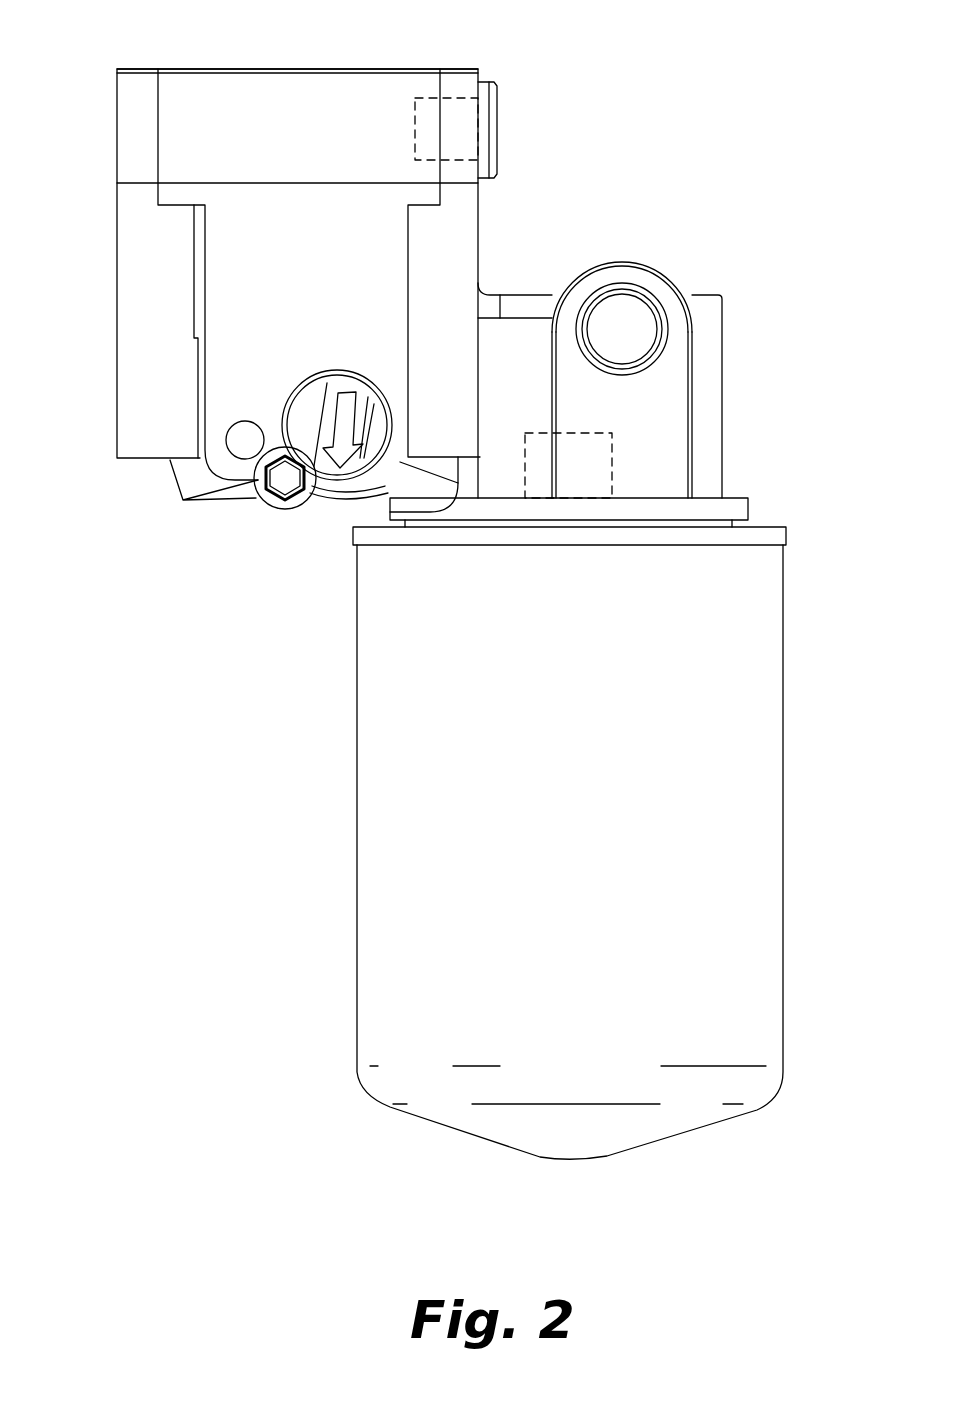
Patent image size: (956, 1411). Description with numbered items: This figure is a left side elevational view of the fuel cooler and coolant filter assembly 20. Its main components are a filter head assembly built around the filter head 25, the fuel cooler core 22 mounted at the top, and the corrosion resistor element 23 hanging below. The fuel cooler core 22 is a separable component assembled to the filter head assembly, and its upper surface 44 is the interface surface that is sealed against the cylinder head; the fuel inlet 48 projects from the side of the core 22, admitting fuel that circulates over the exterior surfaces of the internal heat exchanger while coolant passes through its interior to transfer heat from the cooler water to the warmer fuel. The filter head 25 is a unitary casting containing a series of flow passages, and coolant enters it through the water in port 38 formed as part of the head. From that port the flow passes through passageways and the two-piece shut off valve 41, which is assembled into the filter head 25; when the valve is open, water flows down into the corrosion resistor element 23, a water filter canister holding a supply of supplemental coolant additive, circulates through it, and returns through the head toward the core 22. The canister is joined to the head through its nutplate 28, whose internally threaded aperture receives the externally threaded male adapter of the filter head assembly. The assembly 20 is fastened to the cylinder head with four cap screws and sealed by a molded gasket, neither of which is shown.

The fuel cooler and coolant filter assembly 20 is at (756, 232).
The fuel cooler core 22 is at (140, 140).
The corrosion resistor element 23 is at (713, 811).
The filter head 25 is at (708, 390).
The nutplate 28 is at (774, 527).
The water in port 38 is at (616, 326).
The shut off valve 41 is at (346, 483).
The interface surface 44 is at (328, 69).
The fuel inlet 48 is at (497, 118).